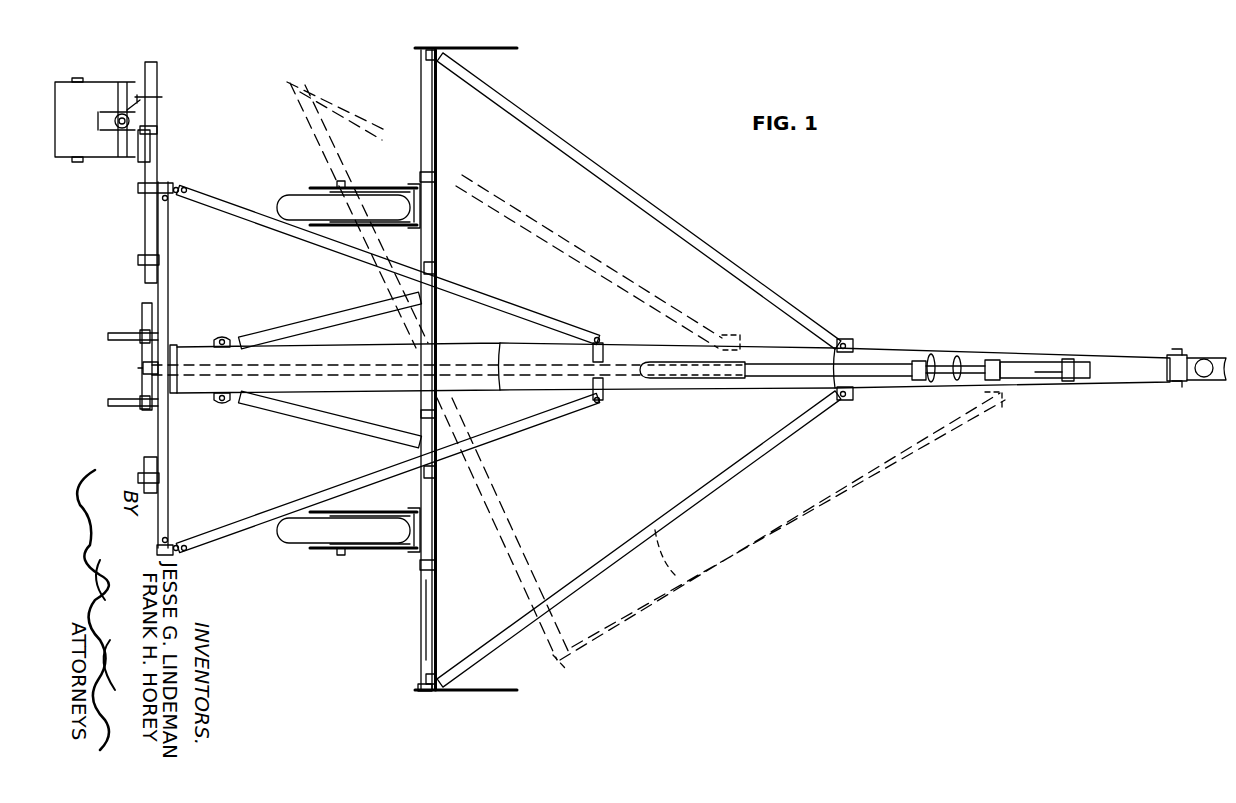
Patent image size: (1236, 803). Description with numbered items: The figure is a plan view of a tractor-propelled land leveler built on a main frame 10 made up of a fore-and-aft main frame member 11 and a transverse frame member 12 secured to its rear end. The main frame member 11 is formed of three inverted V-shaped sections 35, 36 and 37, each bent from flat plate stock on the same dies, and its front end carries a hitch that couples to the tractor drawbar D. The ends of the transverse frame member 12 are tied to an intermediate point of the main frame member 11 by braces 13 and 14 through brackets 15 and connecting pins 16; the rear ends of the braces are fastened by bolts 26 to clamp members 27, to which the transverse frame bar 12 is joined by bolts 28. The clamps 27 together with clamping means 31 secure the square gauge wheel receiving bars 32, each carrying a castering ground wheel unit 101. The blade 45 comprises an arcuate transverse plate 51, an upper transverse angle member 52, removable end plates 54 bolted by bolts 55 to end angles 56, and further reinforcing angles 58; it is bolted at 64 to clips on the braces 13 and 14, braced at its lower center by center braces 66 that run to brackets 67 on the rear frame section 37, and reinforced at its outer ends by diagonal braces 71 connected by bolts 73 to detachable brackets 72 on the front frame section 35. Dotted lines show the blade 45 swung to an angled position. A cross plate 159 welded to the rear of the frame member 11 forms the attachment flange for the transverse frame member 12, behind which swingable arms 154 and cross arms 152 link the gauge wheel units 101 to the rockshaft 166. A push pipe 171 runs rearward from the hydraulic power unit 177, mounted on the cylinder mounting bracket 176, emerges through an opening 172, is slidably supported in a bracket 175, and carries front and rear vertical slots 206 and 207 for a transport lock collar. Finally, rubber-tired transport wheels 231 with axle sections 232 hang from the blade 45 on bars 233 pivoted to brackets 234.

The main frame 10 is at (888, 318).
The main frame member 11 is at (756, 349).
The transverse frame member 12 is at (167, 297).
The brace 13 is at (235, 209).
The brace 14 is at (246, 516).
The bracket 15 is at (605, 347).
The connecting pin 16 is at (596, 337).
The bolt 26 is at (186, 188).
The clamp member 27 is at (160, 184).
The bolt 28 is at (168, 200).
The clamping means 31 is at (160, 261).
The gauge wheel receiving bar 32 is at (158, 78).
The frame section 35 is at (1008, 357).
The frame section 36 is at (640, 356).
The frame section 37 is at (375, 352).
The blade 45 is at (440, 248).
The transverse plate 51 is at (427, 600).
The transverse angle member 52 is at (425, 415).
The end plate 54 is at (487, 46).
The bolt 55 is at (425, 694).
The end angle 56 is at (426, 58).
The angle 58 is at (421, 174).
The bolt 64 is at (425, 264).
The center brace 66 is at (306, 322).
The bracket 67 is at (222, 341).
The diagonal brace 71 is at (634, 192).
The detachable bracket 72 is at (712, 340).
The bolt 73 is at (835, 345).
The castering ground wheel unit 101 is at (97, 78).
The cross arm 152 is at (143, 152).
The swingable arm 154 is at (118, 344).
The cross plate 159 is at (170, 348).
The rockshaft 166 is at (146, 363).
The push pipe 171 is at (452, 362).
The opening 172 is at (745, 388).
The bracket 175 is at (915, 360).
The cylinder mounting bracket 176 is at (1082, 348).
The power unit 177 is at (1043, 384).
The front vertical slot 206 is at (960, 356).
The rear vertical slot 207 is at (931, 355).
The rubber-tired wheel 231 is at (290, 205).
The axle section 232 is at (341, 182).
The bar 233 is at (385, 511).
The bracket 234 is at (428, 540).
The ground engaging tool G is at (79, 171).
The drawbar D is at (1220, 380).